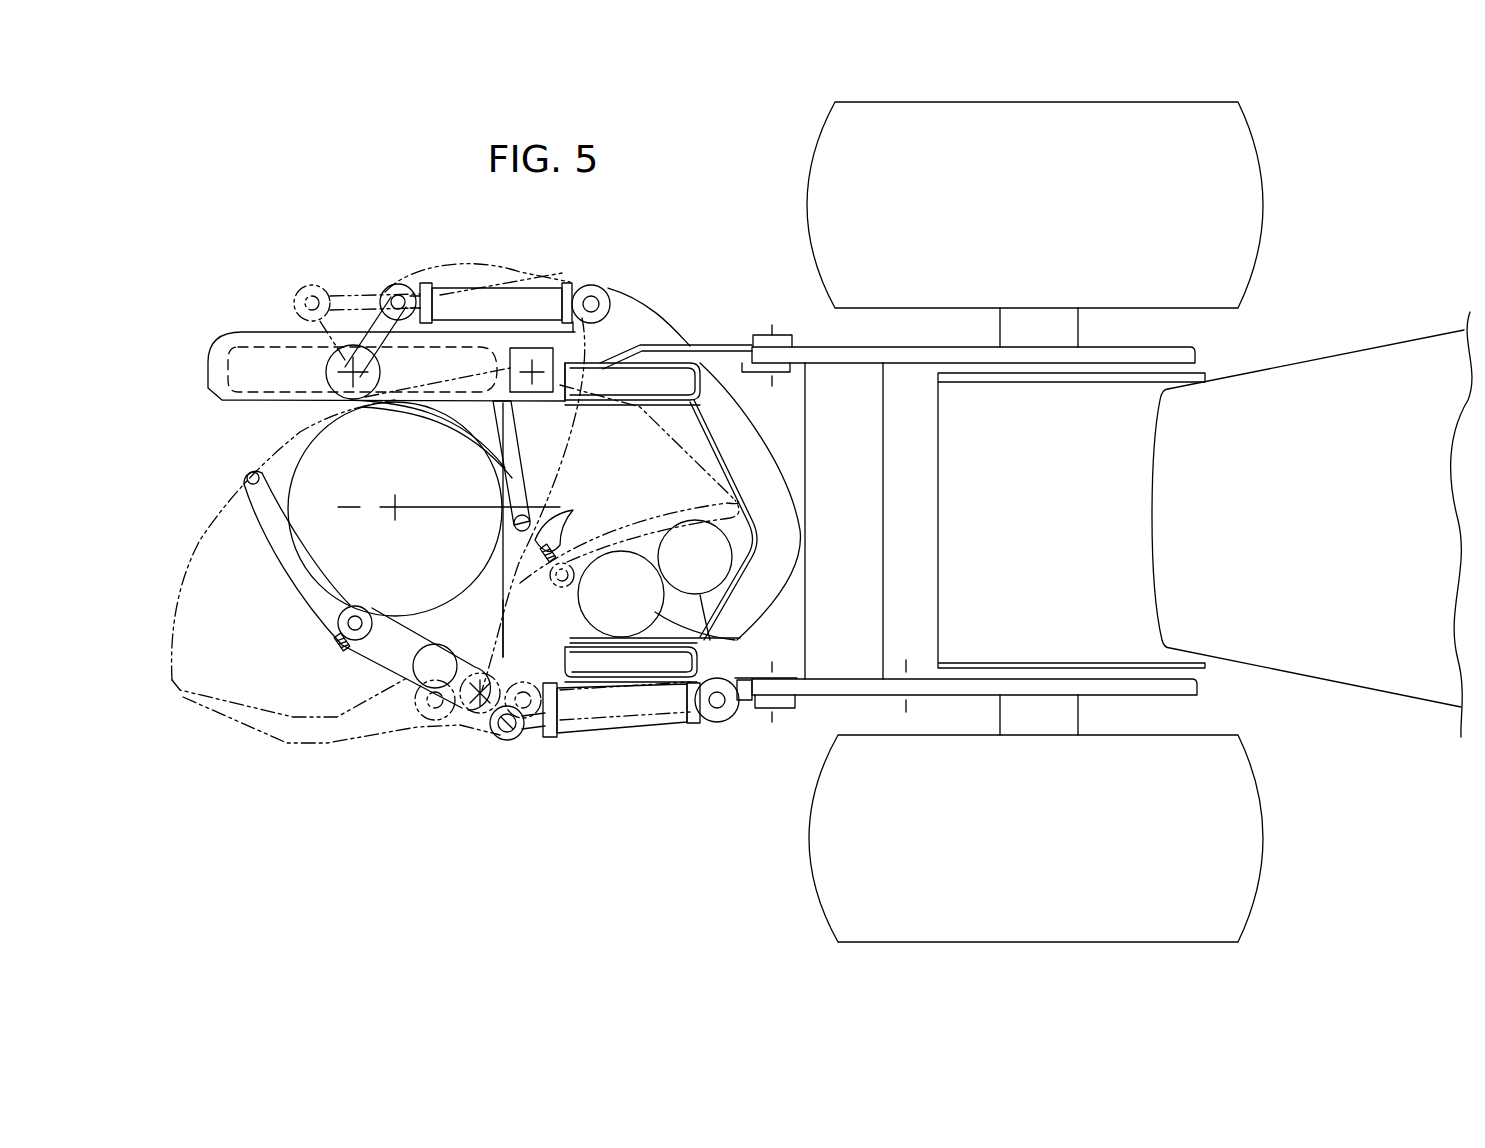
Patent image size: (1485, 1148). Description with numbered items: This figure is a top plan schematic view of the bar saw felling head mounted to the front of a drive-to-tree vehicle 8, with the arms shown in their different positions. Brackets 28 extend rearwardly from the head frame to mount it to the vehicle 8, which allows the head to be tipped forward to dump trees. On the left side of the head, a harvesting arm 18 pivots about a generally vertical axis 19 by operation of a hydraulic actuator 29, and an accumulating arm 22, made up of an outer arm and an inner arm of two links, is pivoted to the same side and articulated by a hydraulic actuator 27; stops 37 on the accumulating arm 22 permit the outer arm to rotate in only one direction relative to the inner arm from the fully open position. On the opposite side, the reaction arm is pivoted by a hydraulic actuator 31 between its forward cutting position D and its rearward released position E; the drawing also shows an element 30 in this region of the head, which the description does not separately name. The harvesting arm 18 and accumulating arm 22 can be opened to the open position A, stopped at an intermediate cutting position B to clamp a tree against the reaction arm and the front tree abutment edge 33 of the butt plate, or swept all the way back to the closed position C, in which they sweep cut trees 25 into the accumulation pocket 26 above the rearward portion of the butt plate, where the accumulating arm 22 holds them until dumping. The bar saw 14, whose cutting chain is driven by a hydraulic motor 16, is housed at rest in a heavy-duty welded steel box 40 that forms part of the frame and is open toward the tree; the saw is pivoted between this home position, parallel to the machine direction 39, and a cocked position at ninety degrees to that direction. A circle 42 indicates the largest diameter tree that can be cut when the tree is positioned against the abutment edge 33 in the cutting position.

The vehicle 8 is at (1318, 352).
The bar saw 14 is at (362, 343).
The hydraulic motor 16 is at (617, 328).
The harvesting arm 18 is at (297, 745).
The generally vertical axis 19 is at (480, 693).
The accumulating arm 22 is at (678, 500).
The cut trees 25 is at (660, 612).
The accumulation pocket 26 is at (735, 543).
The hydraulic actuator 27 is at (614, 744).
The hydraulic actuator 29 is at (590, 727).
The brackets 28 is at (716, 346).
The pivot arm 30 is at (510, 470).
The hydraulic actuator 31 is at (533, 296).
The front tree abutment edge 33 is at (497, 592).
The stops 37 is at (560, 526).
The machine direction 39 is at (470, 512).
The box 40 is at (217, 343).
The circle 42 is at (293, 467).
The open position A is at (200, 700).
The intermediate cutting position B is at (282, 542).
The closed position C is at (628, 508).
The forward cutting position D is at (523, 500).
The rearward released position E is at (462, 263).